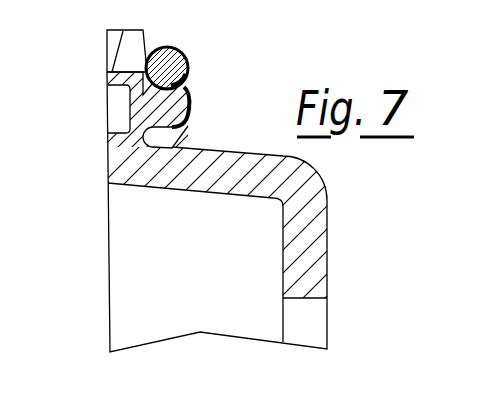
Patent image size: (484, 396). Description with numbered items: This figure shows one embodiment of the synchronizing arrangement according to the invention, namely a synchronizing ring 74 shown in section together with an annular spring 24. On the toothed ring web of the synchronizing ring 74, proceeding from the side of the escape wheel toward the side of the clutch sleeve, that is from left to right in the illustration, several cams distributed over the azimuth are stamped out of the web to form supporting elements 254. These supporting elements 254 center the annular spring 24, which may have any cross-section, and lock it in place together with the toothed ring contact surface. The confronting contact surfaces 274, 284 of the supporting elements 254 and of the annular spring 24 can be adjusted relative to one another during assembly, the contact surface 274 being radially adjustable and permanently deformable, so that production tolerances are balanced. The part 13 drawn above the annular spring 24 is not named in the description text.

The cap member 13 is at (138, 58).
The O-ring seal 274 is at (204, 50).
The O-ring 24 is at (190, 51).
The sealing lip 254 is at (186, 98).
The groove 284 is at (168, 36).
The seal body 74 is at (247, 198).